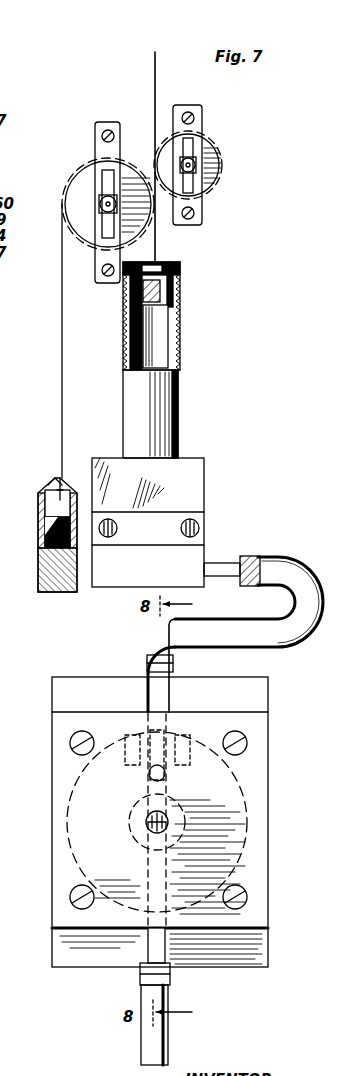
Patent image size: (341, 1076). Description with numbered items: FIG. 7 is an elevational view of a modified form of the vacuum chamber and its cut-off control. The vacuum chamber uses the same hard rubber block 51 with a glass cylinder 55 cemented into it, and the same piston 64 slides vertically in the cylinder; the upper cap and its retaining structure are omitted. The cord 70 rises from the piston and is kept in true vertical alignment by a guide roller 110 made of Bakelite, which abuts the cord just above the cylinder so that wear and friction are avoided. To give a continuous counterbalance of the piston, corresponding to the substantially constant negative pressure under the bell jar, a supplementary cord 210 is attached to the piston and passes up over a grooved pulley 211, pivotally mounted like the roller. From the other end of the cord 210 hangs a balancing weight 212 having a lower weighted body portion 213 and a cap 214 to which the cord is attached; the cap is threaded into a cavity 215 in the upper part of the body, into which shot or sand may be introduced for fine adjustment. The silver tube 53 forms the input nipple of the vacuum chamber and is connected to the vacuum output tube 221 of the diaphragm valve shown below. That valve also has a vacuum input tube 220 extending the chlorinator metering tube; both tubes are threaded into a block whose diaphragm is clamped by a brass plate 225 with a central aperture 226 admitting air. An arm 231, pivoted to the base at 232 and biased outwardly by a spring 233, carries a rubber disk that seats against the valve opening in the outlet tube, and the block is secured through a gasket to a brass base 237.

The cord 70 is at (155, 66).
The grooved pulley 211 is at (73, 181).
The guide roller 110 is at (222, 156).
The supplementary cord 210 is at (62, 285).
The piston 64 is at (165, 293).
The glass cylinder 55 is at (153, 386).
The hard rubber block 51 is at (190, 498).
The cap 214 is at (56, 478).
The balancing weight 212 is at (40, 500).
The cavity 215 is at (44, 532).
The weighted body portion 213 is at (45, 592).
The silver tube 53 is at (214, 562).
The vacuum output tube 221 is at (182, 680).
The pivot 232 is at (138, 808).
The brass plate 225 is at (255, 757).
The spring 233 is at (146, 770).
The arm 231 is at (168, 784).
The central aperture 226 is at (175, 812).
The vacuum input tube 220 is at (147, 946).
The brass base 237 is at (232, 968).